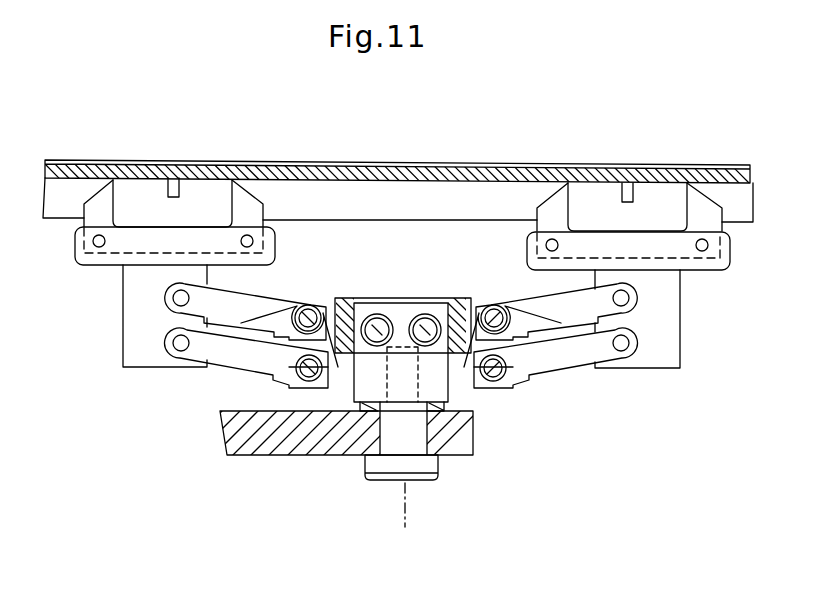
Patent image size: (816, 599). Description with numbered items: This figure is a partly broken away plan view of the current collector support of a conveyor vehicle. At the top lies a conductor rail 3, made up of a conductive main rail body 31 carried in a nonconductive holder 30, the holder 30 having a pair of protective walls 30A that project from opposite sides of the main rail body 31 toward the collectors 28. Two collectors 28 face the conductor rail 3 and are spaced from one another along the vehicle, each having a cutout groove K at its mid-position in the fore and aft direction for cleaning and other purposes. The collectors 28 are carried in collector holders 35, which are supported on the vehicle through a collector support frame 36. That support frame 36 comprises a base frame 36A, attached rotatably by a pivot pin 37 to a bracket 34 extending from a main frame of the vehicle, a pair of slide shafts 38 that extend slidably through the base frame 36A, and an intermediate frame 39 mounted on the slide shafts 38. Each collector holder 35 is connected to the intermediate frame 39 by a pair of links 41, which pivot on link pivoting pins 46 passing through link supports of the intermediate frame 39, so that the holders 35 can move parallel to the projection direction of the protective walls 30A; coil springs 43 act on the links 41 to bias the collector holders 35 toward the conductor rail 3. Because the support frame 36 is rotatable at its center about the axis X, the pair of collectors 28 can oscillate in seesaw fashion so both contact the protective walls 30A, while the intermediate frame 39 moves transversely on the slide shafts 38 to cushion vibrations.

The conductor rail 3 is at (303, 158).
The main rail body 31 is at (370, 178).
The holder 30 is at (466, 163).
The protective walls 30A is at (485, 208).
The collectors 28 is at (140, 188).
The cutout groove K is at (173, 185).
The collector holders 35 is at (123, 318).
The links 41 is at (233, 363).
The link pivoting pins 46 is at (306, 330).
The coil springs 43 is at (273, 312).
The intermediate frame 39 is at (345, 297).
The collector support frame 36 is at (492, 399).
The base frame 36A is at (440, 390).
The slide shafts 38 is at (420, 315).
The pivot pin 37 is at (363, 468).
The bracket 34 is at (277, 450).
The axis X is at (405, 521).